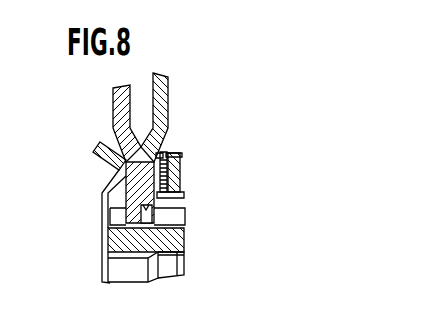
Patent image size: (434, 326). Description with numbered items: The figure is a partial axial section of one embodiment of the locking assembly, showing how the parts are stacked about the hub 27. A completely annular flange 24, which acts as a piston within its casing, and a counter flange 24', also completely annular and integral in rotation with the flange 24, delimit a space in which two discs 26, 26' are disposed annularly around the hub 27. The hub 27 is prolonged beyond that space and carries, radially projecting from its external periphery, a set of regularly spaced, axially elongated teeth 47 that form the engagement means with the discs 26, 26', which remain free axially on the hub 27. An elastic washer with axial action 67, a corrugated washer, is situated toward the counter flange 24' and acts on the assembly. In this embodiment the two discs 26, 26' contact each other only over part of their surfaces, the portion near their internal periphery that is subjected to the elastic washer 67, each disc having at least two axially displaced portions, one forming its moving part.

The flange 24 is at (113, 205).
The counter flange 24' is at (197, 152).
The disc 26 is at (104, 120).
The disc 26' is at (176, 109).
The hub 27 is at (188, 245).
The teeth 47 is at (172, 218).
The elastic washer with axial action 67 is at (165, 152).